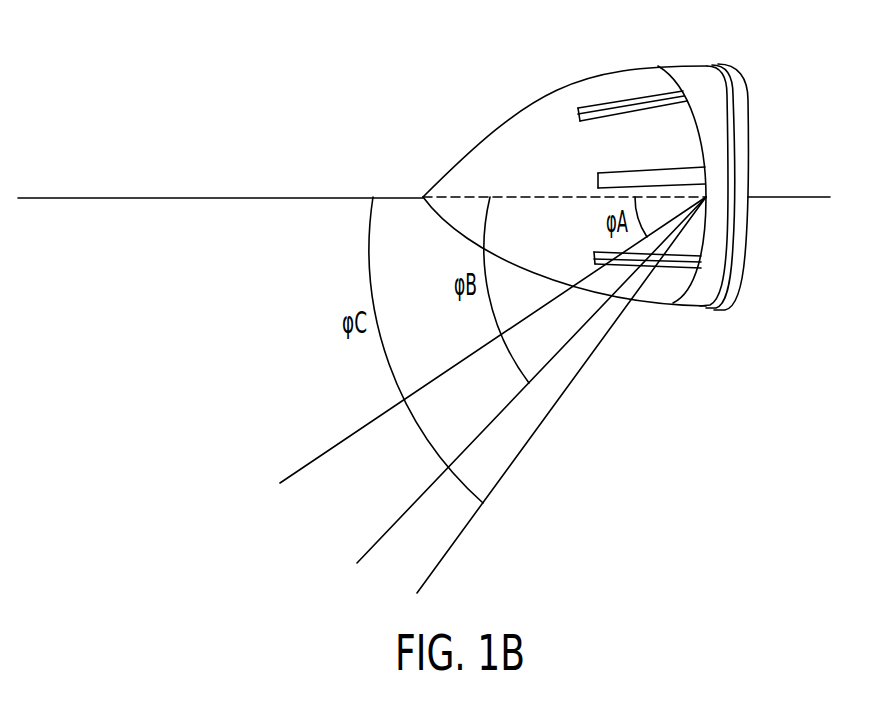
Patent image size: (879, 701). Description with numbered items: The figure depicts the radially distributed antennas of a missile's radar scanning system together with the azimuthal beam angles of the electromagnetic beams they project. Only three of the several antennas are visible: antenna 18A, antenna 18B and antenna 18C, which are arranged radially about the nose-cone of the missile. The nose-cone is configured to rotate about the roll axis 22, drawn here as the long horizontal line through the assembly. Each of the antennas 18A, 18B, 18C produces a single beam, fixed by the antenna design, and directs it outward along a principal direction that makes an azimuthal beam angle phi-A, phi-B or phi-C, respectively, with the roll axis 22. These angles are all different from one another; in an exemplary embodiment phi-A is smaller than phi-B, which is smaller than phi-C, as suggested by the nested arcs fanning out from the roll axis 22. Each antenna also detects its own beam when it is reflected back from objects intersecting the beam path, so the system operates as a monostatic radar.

The roll axis 22 is at (266, 197).
The antenna 18A is at (690, 200).
The antenna 18B is at (675, 168).
The antenna 18C is at (656, 93).